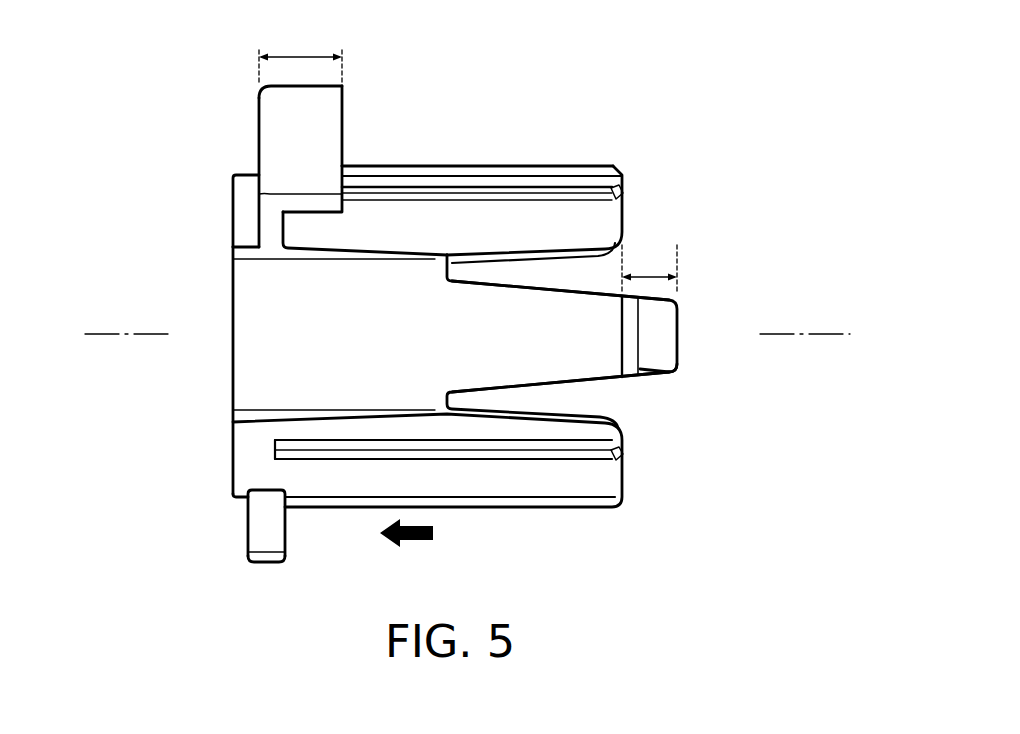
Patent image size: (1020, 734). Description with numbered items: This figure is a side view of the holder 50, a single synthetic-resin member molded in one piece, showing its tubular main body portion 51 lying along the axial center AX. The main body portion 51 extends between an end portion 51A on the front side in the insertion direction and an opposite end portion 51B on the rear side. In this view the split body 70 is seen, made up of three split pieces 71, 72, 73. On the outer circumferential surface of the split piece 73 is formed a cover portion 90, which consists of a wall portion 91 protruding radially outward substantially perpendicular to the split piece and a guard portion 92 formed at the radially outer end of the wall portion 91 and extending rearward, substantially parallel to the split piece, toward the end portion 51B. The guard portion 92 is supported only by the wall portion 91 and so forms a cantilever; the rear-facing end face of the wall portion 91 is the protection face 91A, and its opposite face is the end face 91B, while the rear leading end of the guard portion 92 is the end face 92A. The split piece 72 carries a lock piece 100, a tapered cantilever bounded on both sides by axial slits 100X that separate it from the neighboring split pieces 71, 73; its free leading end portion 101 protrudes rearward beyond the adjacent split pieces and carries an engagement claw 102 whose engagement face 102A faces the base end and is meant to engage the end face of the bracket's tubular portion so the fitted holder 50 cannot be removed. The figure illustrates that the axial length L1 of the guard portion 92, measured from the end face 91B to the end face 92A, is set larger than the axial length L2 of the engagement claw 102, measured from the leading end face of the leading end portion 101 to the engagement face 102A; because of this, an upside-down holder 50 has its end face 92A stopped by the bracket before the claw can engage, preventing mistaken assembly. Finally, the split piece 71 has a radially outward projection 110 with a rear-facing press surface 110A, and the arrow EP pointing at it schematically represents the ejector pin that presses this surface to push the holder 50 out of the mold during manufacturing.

The holder 50 is at (617, 79).
The main body portion 51 is at (589, 158).
The end portion 51A is at (238, 293).
The end portion 51B is at (617, 210).
The split body 70 is at (527, 518).
The split piece 71 is at (243, 450).
The split piece 72 is at (243, 352).
The split piece 73 is at (497, 210).
The cover portion 90 is at (176, 140).
The wall portion 91 is at (267, 221).
The protection face 91A is at (286, 233).
The end face 91B is at (258, 120).
The guard portion 92 is at (283, 147).
The end face 92A is at (343, 117).
The lock piece 100 is at (478, 326).
The slit 100X is at (520, 274).
The leading end portion 101 is at (665, 373).
The engagement claw 102 is at (667, 313).
The engagement face 102A is at (614, 346).
The projection 110 is at (258, 525).
The press surface 110A is at (285, 528).
The axial length of the guard portion L1 is at (300, 52).
The axial length of the engagement claw L2 is at (649, 268).
The axial center AX is at (801, 326).
The ejector pin EP is at (416, 548).